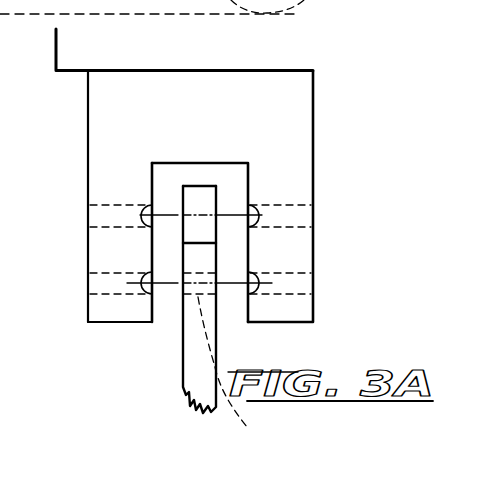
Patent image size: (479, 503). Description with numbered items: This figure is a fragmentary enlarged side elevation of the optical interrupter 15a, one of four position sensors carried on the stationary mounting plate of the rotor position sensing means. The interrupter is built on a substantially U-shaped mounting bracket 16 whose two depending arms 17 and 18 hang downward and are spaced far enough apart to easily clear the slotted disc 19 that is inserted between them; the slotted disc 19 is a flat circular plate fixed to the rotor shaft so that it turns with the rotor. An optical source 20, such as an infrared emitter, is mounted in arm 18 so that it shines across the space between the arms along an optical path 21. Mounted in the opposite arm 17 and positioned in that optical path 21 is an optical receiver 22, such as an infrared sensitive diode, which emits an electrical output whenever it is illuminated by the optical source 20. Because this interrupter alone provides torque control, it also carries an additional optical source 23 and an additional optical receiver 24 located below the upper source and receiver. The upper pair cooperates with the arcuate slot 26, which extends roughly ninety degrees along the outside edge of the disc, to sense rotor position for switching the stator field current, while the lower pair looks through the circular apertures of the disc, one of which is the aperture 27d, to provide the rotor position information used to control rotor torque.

The optical interrupter 15a is at (101, 86).
The mounting bracket 16 is at (86, 136).
The depending arm 17 is at (94, 246).
The depending arm 18 is at (306, 247).
The slotted disc 19 is at (188, 362).
The optical source 20 is at (250, 185).
The optical path 21 is at (176, 214).
The optical receiver 22 is at (142, 216).
The additional optical source 23 is at (248, 294).
The additional optical receiver 24 is at (150, 294).
The arcuate slot 26 is at (192, 190).
The circular aperture 27d is at (240, 367).